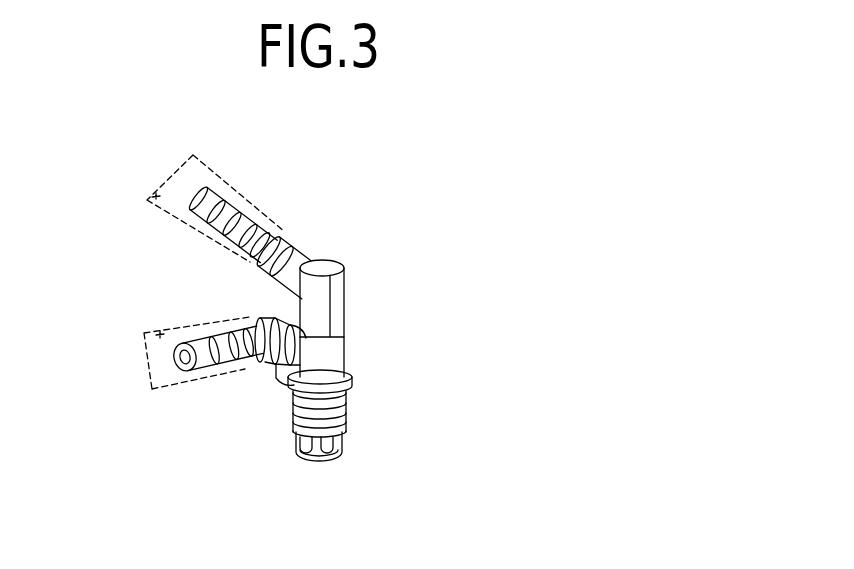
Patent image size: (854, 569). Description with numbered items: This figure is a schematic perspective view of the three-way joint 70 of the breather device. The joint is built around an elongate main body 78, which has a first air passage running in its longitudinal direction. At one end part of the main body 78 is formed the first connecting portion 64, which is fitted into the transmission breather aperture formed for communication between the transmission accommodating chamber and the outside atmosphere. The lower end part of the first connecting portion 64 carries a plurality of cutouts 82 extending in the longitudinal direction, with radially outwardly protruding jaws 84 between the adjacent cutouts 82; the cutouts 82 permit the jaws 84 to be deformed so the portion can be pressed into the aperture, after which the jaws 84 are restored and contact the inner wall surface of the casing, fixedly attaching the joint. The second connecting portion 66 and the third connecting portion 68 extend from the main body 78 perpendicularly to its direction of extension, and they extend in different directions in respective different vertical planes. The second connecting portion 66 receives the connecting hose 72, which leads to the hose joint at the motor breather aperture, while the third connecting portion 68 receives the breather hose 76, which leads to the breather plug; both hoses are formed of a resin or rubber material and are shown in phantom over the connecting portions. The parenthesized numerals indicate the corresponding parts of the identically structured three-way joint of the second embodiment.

The three-way joint 70 is at (414, 233).
The third connecting portion 68 is at (295, 175).
The second connecting portion 66 is at (222, 404).
The breather hose 76 is at (172, 205).
The connecting hose 72 is at (158, 333).
The main body 78 is at (370, 365).
The first connecting portion 64 is at (365, 454).
The jaws 84 is at (306, 456).
The cutouts 82 is at (325, 457).